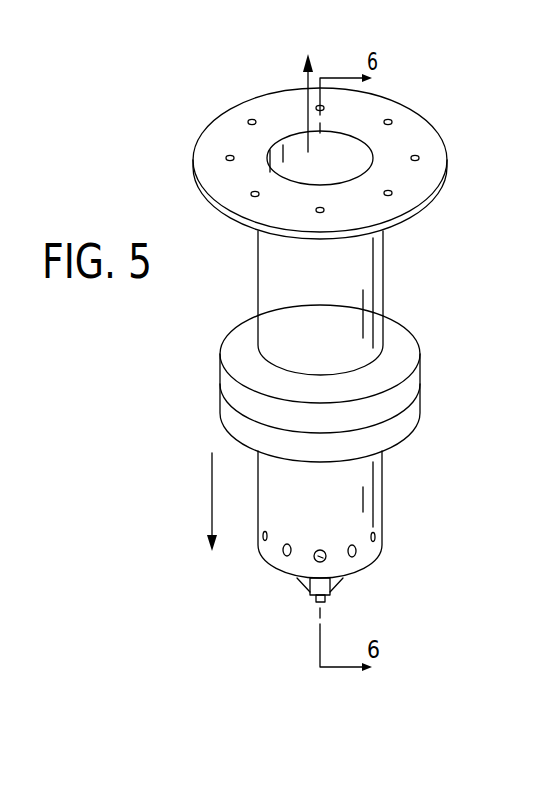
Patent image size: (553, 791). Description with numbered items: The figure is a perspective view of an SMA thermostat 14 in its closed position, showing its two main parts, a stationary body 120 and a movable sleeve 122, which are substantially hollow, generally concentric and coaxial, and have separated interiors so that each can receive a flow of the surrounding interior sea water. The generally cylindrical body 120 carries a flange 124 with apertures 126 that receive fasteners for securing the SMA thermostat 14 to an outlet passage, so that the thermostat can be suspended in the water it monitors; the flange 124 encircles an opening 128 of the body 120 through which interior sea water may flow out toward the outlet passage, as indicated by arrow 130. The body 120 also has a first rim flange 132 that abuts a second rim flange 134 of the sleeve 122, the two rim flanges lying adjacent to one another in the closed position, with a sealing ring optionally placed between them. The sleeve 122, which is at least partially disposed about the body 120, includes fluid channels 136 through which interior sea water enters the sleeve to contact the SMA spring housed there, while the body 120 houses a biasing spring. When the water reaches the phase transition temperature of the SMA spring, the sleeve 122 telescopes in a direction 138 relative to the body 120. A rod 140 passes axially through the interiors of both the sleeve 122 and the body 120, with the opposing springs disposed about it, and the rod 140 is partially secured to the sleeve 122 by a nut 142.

The SMA thermostat 14 is at (447, 357).
The body 120 is at (365, 265).
The sleeve 122 is at (362, 508).
The flange 124 is at (398, 135).
The apertures 126 is at (252, 193).
The opening 128 is at (348, 160).
The arrow 130 is at (307, 117).
The first rim flange 132 is at (227, 380).
The second rim flange 134 is at (414, 407).
The fluid channels 136 is at (373, 542).
The direction 138 is at (212, 492).
The rod 140 is at (316, 602).
The nut 142 is at (303, 586).